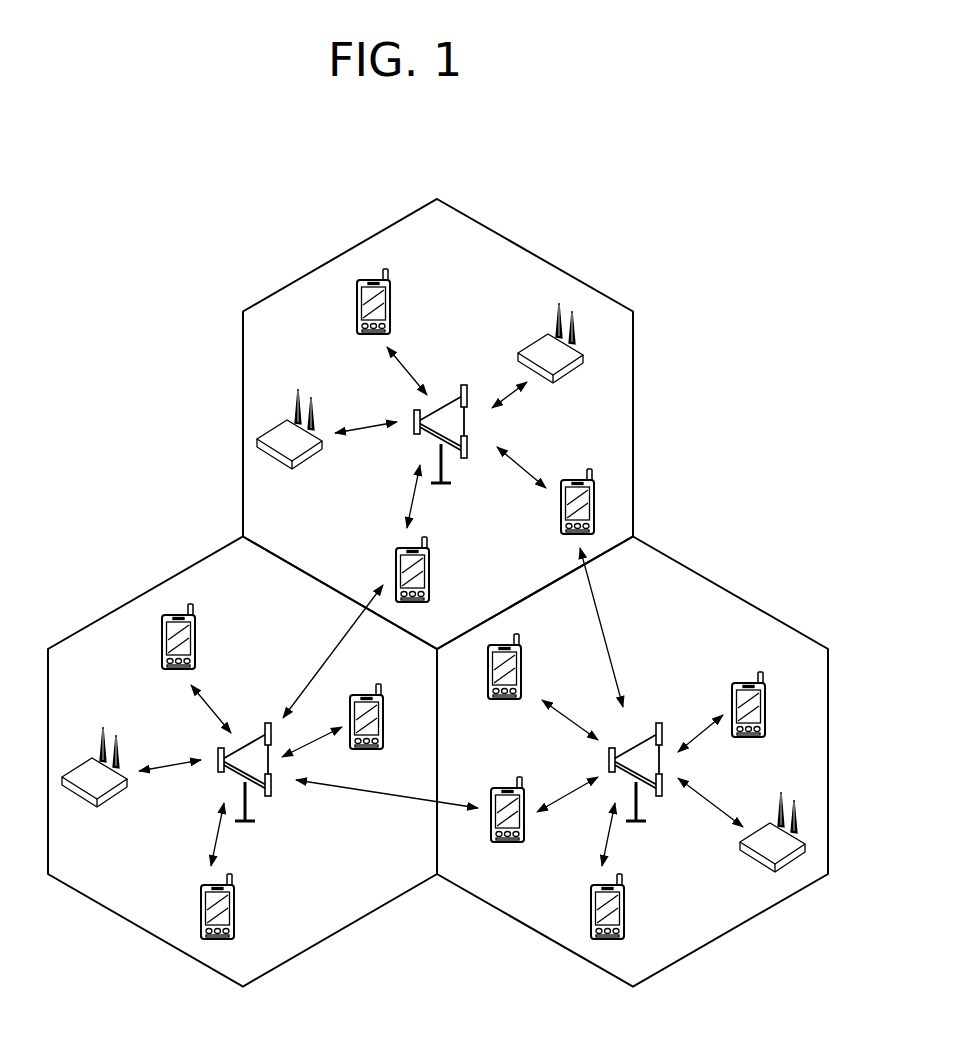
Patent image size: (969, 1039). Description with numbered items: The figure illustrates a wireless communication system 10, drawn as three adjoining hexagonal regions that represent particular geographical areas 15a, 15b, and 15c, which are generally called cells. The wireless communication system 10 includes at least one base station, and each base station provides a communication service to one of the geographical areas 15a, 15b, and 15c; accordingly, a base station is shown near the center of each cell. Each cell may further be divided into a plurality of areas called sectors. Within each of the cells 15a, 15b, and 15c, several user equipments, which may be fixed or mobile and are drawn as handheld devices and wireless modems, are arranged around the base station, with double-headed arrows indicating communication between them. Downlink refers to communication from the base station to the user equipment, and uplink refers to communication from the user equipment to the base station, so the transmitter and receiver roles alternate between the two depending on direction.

The wireless communication system 10 is at (716, 317).
The geographical area (cell) 15a is at (633, 410).
The geographical area (cell) 15b is at (755, 606).
The geographical area (cell) 15c is at (121, 604).